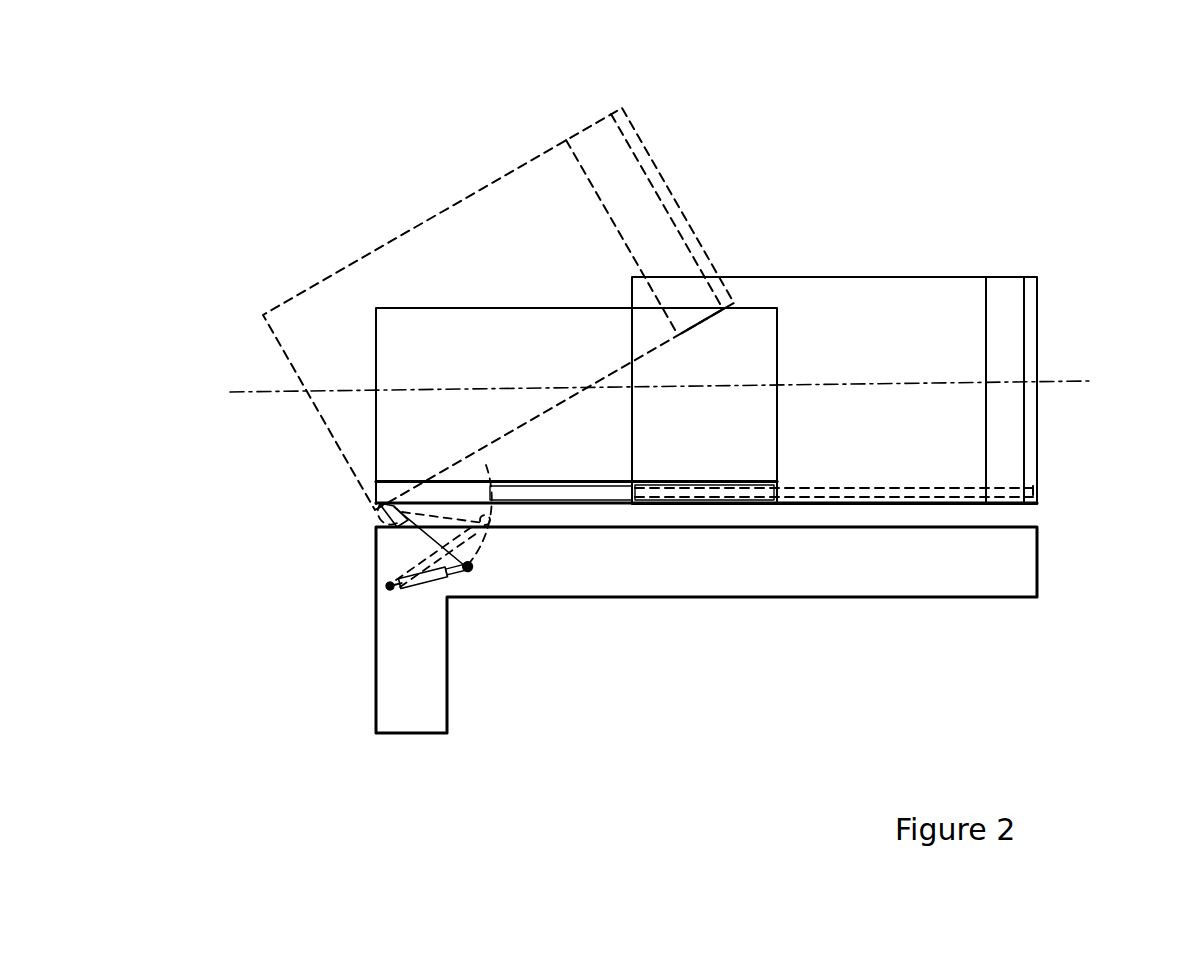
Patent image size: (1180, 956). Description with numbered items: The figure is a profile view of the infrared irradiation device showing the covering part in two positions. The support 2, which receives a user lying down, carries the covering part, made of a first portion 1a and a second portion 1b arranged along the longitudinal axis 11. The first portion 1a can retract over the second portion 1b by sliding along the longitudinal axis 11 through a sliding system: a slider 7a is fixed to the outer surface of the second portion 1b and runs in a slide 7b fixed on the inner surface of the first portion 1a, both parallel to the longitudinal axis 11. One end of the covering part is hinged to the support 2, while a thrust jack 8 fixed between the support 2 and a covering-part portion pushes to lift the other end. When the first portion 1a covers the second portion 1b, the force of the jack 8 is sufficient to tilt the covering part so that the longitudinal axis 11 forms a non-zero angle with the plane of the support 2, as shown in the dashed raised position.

The first portion 1a is at (490, 235).
The second portion 1b is at (420, 308).
The support 2 is at (392, 542).
The slider 7a is at (592, 493).
The slide 7b is at (935, 490).
The thrust jack 8 is at (445, 592).
The longitudinal axis 11 is at (683, 387).